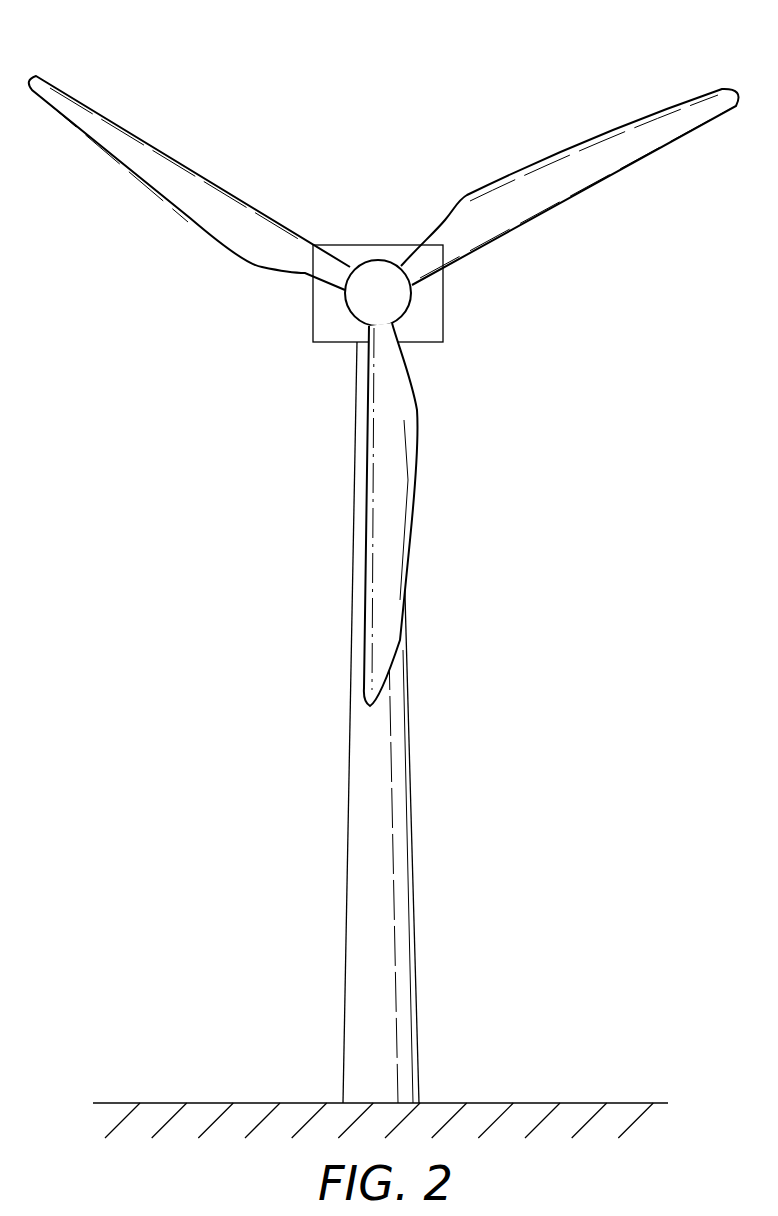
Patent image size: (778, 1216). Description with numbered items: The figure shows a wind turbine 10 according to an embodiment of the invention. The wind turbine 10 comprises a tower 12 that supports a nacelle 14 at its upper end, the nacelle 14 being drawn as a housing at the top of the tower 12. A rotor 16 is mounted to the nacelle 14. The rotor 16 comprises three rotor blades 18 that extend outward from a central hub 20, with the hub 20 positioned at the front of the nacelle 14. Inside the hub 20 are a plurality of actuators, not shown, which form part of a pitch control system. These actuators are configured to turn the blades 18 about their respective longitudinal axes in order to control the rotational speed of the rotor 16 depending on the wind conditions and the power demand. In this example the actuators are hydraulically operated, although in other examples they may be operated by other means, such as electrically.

The wind turbine 10 is at (384, 592).
The tower 12 is at (416, 872).
The nacelle 14 is at (445, 322).
The rotor 16 is at (238, 337).
The rotor blades 18 is at (660, 100).
The hub 20 is at (378, 261).